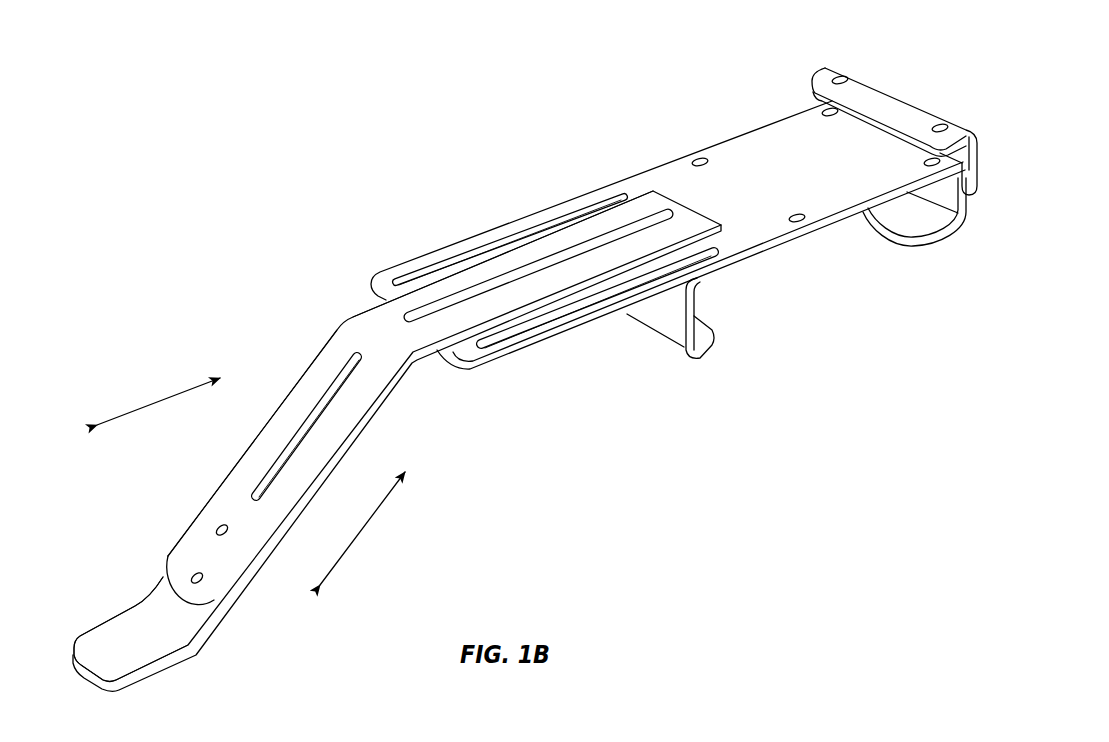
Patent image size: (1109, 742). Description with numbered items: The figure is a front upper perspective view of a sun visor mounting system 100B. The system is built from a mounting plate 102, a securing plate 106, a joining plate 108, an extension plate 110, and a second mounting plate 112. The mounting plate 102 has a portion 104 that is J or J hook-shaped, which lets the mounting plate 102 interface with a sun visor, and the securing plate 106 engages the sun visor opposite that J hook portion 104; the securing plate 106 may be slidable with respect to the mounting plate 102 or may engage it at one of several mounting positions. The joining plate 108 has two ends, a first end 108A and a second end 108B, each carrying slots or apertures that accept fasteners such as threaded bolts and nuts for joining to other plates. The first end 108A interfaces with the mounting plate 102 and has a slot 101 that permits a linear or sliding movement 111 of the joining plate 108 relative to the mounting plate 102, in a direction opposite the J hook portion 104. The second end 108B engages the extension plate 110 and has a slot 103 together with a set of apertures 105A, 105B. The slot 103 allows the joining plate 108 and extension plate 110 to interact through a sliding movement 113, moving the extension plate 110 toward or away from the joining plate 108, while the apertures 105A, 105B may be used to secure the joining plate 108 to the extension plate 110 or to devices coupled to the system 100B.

The sun visor mounting system 100B is at (528, 372).
The slot 101 is at (561, 252).
The mounting plate 102 is at (777, 143).
The slot 103 is at (323, 387).
The J hook portion 104 is at (934, 258).
The aperture 105A is at (216, 525).
The aperture 105B is at (206, 584).
The securing plate 106 is at (691, 358).
The joining plate 108 is at (363, 318).
The first end of joining plate 108A is at (462, 260).
The second end of joining plate 108B is at (376, 412).
The extension plate 110 is at (153, 663).
The linear or sliding movement 111 is at (160, 400).
The second mounting plate 112 is at (902, 98).
The sliding or movement 113 is at (367, 527).